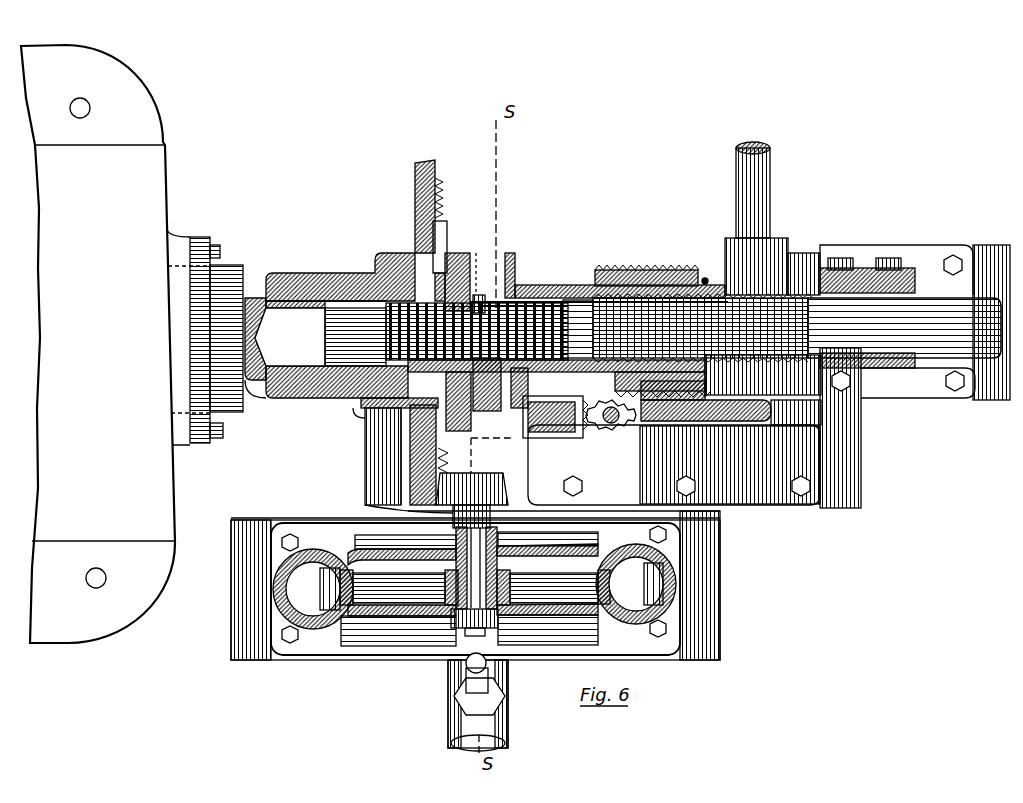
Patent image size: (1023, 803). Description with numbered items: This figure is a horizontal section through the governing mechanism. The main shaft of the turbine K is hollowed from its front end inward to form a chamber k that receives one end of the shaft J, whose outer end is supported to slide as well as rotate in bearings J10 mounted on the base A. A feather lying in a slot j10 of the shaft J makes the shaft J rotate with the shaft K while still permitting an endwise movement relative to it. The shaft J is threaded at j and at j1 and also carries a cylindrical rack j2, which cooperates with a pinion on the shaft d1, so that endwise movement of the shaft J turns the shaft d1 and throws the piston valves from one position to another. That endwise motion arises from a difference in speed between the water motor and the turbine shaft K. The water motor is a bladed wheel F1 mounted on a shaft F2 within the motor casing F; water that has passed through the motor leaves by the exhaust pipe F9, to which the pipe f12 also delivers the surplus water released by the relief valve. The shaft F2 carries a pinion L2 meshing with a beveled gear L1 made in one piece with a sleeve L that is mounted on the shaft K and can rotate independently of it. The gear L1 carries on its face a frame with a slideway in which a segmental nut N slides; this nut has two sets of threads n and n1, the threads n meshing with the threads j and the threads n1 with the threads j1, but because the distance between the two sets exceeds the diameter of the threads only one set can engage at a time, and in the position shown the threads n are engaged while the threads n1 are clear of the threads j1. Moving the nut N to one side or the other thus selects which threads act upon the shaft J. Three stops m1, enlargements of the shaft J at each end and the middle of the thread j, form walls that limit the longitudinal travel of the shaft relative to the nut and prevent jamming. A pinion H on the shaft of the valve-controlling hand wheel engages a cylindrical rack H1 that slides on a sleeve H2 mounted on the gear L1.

The main shaft of the turbine K is at (238, 284).
The sleeve L is at (318, 272).
The beveled gear L1 is at (404, 172).
The stops m1 is at (368, 332).
The segmental nut N is at (455, 272).
The threads n is at (470, 275).
The sleeve H2 is at (537, 282).
The threads j1 is at (550, 305).
The cylindrical rack H1 is at (630, 263).
The cylindrical rack j2 is at (700, 272).
The shaft d1 is at (752, 198).
The bearings J10 is at (886, 272).
The shaft J is at (797, 328).
The base A is at (938, 407).
The pinion H is at (611, 434).
The threads n1 is at (512, 383).
The pinion L2 is at (497, 475).
The shaft F2 is at (470, 533).
The bladed wheel F1 is at (340, 596).
The motor casing F is at (557, 622).
The pipe f12 is at (462, 673).
The exhaust pipe F9 is at (455, 727).
The chamber k is at (330, 327).
The slot j10 is at (328, 342).
The threads j is at (344, 352).